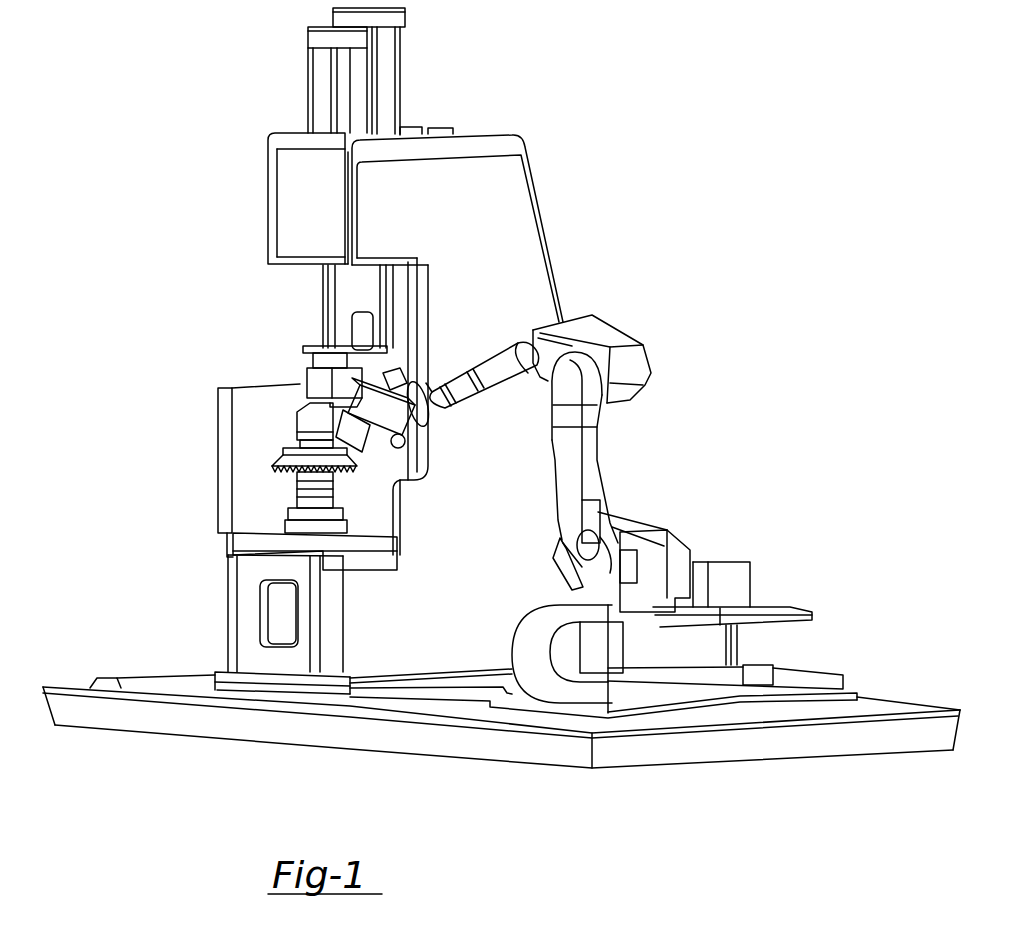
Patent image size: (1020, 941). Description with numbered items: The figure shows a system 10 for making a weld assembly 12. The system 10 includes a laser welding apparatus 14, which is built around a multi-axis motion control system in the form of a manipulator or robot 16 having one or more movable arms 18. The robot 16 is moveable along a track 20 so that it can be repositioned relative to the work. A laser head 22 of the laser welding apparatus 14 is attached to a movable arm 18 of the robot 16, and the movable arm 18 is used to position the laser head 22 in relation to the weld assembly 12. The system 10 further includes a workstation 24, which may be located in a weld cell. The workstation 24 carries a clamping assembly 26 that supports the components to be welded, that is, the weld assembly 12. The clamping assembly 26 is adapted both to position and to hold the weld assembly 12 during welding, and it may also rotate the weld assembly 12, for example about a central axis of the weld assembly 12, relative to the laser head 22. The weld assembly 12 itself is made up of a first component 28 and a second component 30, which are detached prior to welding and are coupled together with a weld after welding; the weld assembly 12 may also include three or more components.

The system 10 is at (628, 214).
The weld assembly 12 is at (269, 469).
The laser welding apparatus 14 is at (551, 493).
The robot 16 is at (610, 327).
The movable arm 18 is at (497, 350).
The track 20 is at (818, 670).
The laser head 22 is at (310, 380).
The workstation 24 is at (268, 207).
The clamping assembly 26 is at (300, 425).
The first component 28 is at (292, 480).
The second component 30 is at (275, 463).